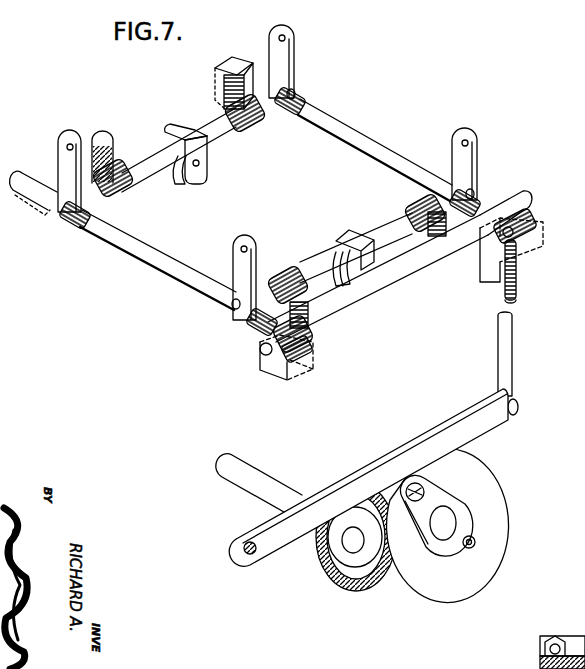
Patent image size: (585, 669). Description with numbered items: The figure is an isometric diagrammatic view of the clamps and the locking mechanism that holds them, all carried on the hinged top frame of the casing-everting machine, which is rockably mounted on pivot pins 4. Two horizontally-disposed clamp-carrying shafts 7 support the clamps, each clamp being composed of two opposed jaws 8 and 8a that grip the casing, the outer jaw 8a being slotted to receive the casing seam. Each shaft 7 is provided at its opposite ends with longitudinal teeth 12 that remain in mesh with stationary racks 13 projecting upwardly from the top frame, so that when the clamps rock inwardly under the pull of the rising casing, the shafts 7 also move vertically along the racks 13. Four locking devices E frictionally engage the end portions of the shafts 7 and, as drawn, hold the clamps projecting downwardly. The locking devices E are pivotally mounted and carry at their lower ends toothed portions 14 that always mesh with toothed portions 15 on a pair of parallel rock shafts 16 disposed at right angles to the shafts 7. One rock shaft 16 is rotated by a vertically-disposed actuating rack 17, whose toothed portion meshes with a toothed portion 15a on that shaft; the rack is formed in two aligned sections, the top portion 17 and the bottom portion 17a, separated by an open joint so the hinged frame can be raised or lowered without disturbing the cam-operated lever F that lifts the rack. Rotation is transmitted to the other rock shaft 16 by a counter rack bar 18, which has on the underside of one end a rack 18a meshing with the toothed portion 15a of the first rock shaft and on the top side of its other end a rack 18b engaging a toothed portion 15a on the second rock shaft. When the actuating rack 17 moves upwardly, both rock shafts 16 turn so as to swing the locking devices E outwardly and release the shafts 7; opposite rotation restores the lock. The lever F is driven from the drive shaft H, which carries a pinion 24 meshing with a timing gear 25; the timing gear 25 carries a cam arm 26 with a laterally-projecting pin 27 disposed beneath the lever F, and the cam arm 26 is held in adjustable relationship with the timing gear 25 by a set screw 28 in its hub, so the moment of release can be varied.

The pivot pins 4 is at (560, 636).
The clamp-carrying shafts 7 is at (212, 124).
The jaw 8 is at (199, 188).
The outer jaw 8a is at (176, 182).
The teeth 12 is at (112, 196).
The stationary racks 13 is at (101, 132).
The toothed portions of locking devices 14 is at (50, 209).
The toothed portions of rock shafts 15 is at (80, 226).
The toothed portion 15a is at (533, 220).
The rock shafts 16 is at (360, 136).
The actuating rack 17 is at (518, 254).
The bottom portion of actuating rack 17a is at (510, 355).
The counter rack bar 18 is at (396, 275).
The rack 18a is at (528, 203).
The rack 18b is at (314, 330).
The pinion 24 is at (332, 560).
The timing gear 25 is at (384, 580).
The cam arm 26 is at (441, 500).
The laterally-projecting pin 27 is at (424, 486).
The set screw 28 is at (476, 548).
The locking devices E is at (62, 172).
The cam-operated lever F is at (487, 425).
The drive shaft H is at (254, 478).